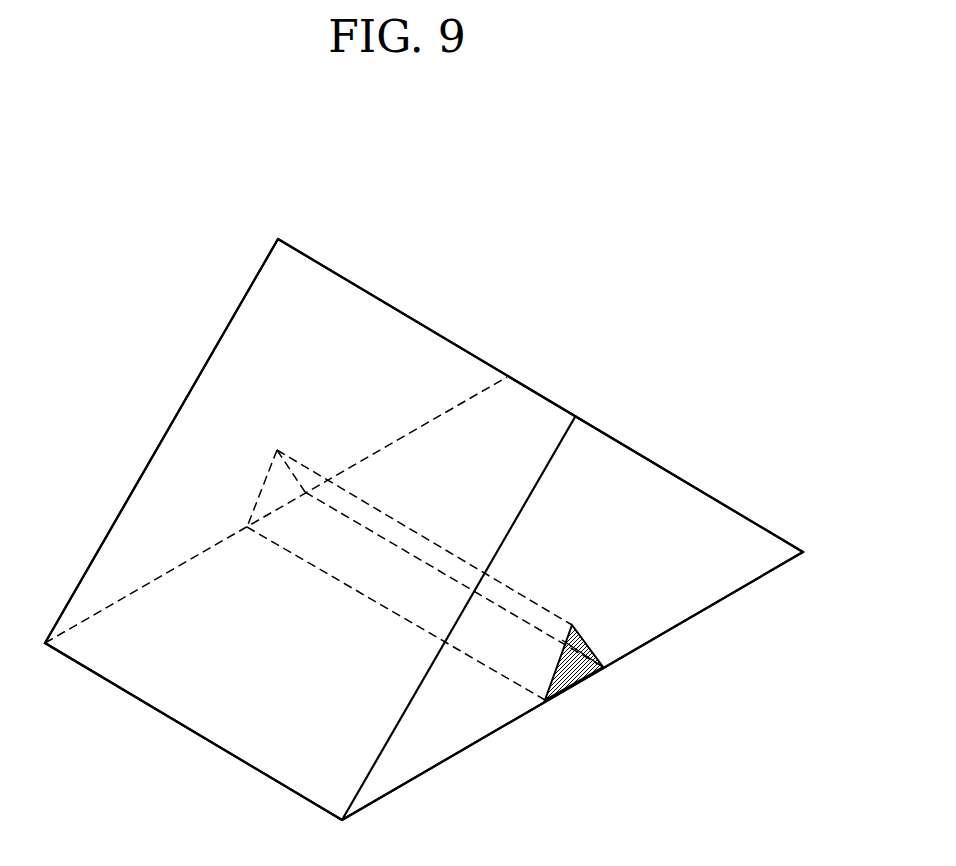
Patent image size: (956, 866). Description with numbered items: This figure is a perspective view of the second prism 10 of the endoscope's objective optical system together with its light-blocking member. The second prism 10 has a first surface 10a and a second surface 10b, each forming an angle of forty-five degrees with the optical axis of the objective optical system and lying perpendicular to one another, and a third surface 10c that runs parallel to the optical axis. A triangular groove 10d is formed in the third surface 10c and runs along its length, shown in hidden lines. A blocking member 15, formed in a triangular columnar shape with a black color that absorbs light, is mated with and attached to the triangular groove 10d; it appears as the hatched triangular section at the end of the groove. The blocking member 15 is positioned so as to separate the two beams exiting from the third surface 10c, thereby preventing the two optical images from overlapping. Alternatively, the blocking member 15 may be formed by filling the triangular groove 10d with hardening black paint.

The second prism 10 is at (566, 370).
The first surface 10a is at (206, 393).
The second surface 10b is at (660, 463).
The third surface 10c is at (682, 625).
The triangular groove 10d is at (263, 491).
The blocking member 15 is at (578, 682).